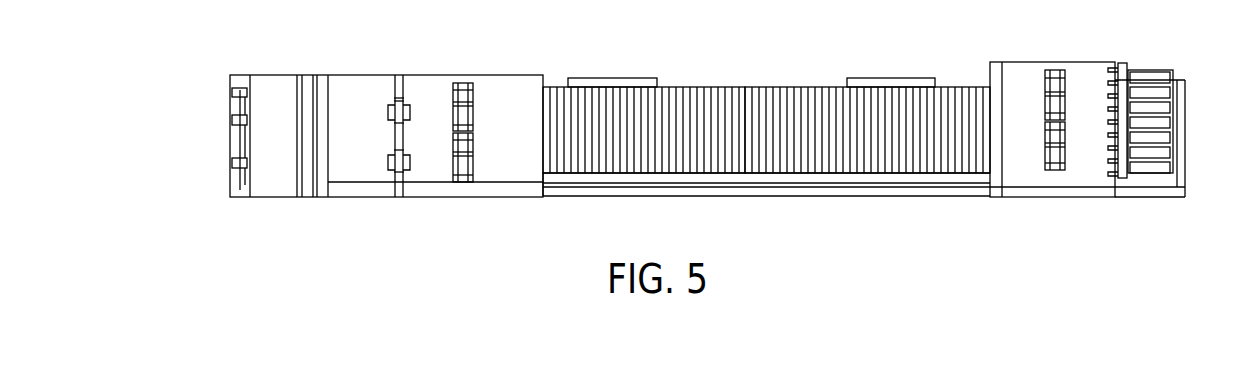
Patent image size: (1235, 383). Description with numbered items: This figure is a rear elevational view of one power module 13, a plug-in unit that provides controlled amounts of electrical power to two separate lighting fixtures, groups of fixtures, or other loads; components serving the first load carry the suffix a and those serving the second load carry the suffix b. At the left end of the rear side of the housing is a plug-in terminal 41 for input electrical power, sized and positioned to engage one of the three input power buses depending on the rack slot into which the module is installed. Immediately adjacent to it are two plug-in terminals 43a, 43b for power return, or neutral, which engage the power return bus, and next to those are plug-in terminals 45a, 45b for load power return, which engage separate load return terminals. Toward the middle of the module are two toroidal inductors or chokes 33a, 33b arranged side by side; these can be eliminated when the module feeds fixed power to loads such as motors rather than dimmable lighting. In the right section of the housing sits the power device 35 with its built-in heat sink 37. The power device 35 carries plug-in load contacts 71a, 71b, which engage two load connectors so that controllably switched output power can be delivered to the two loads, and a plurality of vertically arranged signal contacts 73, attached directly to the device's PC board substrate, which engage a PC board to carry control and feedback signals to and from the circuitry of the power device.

The power module 13 is at (200, 131).
The plug-in terminal for input electrical power 41 is at (308, 82).
The plug-in terminal for power return 43a is at (404, 110).
The plug-in terminal for power return 43b is at (398, 168).
The plug-in terminal for load power return 45a is at (466, 105).
The plug-in terminal for load power return 45b is at (463, 160).
The toroidal inductor or choke 33b is at (660, 100).
The toroidal inductor or choke 33a is at (805, 103).
The power device 35 is at (1082, 72).
The plug-in load contact 71a is at (1050, 90).
The plug-in load contact 71b is at (1050, 152).
The signal contacts 73 is at (1122, 68).
The heat sink 37 is at (1147, 95).